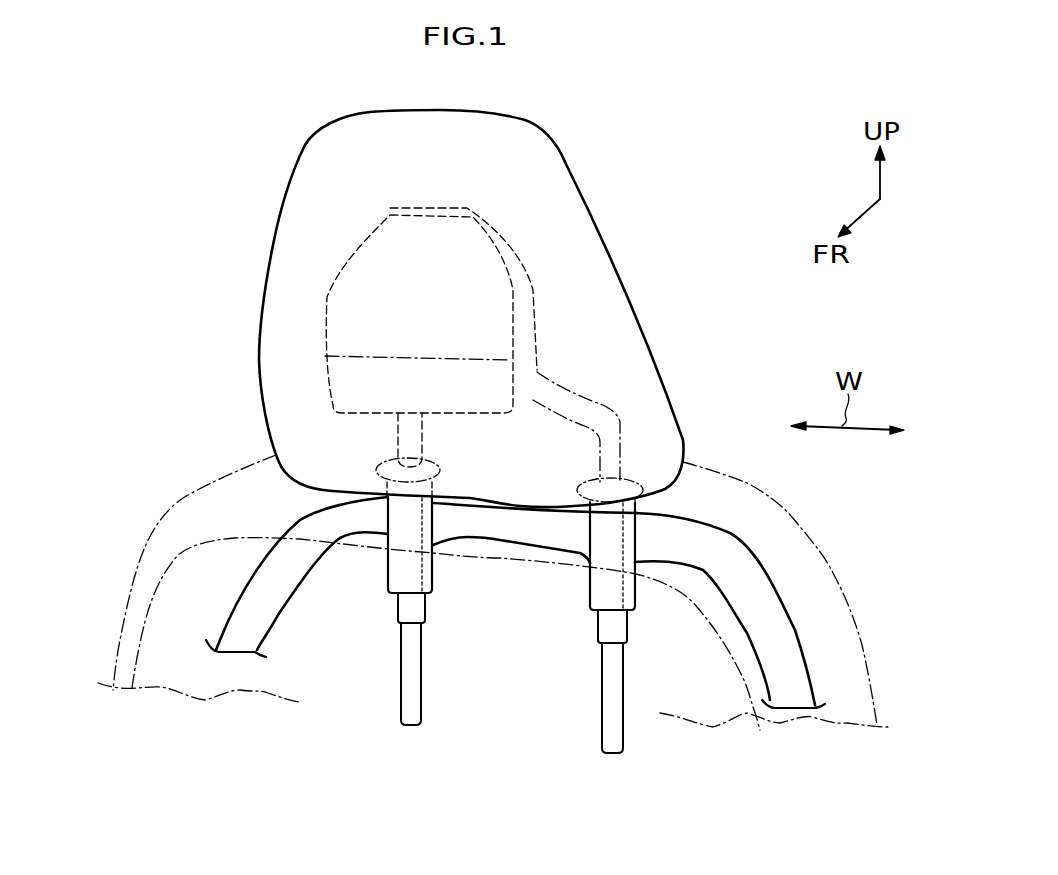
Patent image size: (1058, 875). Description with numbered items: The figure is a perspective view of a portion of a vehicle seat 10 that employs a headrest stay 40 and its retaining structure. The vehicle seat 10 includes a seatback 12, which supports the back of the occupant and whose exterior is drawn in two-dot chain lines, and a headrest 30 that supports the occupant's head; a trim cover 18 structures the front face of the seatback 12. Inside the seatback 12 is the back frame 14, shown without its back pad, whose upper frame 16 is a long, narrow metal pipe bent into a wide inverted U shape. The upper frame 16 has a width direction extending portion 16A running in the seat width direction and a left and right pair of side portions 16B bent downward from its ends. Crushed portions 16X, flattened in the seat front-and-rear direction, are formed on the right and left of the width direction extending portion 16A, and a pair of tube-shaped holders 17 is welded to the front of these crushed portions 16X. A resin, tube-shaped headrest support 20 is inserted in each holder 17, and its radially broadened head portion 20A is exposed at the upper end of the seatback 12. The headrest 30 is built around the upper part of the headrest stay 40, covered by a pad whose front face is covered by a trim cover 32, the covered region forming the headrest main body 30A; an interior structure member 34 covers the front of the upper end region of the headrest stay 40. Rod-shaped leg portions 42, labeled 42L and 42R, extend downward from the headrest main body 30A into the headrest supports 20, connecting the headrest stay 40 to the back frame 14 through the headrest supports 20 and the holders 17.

The vehicle seat 10 is at (122, 362).
The seatback 12 is at (852, 541).
The back frame 14 is at (833, 687).
The upper frame 16 is at (501, 567).
The width direction extending portion 16A is at (492, 537).
The side portions 16B is at (257, 592).
The crushed portions 16X is at (434, 512).
The holders 17 is at (398, 577).
The trim cover 18 is at (858, 630).
The headrest support 20 is at (400, 604).
The head portion 20A is at (383, 463).
The headrest 30 is at (488, 308).
The headrest main body 30A is at (488, 308).
The trim cover 32 is at (600, 267).
The interior structure member 34 is at (523, 328).
The headrest stay 40 is at (613, 410).
The leg portions 42 is at (462, 690).
The leg portion 42R is at (405, 665).
The leg portion 42L is at (608, 663).